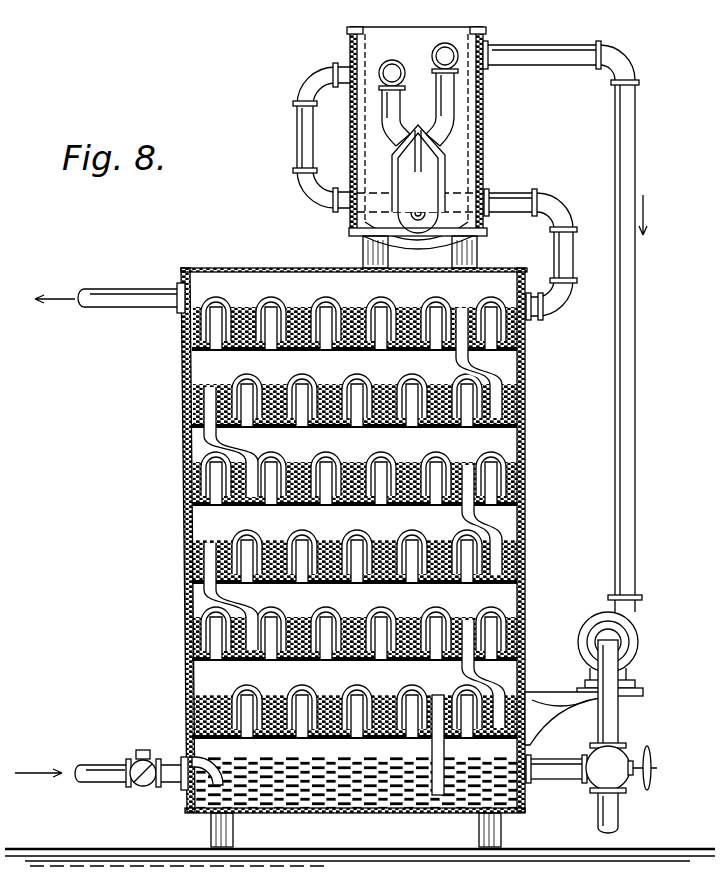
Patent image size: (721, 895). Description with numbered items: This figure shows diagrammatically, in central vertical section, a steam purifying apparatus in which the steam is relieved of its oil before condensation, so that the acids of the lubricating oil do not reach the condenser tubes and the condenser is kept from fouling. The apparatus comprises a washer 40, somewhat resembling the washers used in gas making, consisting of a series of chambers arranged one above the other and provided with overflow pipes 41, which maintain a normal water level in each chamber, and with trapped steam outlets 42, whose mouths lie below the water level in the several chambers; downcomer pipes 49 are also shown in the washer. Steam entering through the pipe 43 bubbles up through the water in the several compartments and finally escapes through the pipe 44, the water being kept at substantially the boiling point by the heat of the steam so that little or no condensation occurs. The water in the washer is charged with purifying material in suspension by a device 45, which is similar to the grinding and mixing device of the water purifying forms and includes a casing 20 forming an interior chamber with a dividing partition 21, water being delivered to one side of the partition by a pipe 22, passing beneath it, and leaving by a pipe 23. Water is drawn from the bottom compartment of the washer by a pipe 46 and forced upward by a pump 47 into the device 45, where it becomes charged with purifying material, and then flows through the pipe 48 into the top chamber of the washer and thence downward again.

The casing 20 is at (447, 183).
The dividing partition 21 is at (421, 165).
The pipe 22 is at (559, 73).
The pipe 23 is at (382, 104).
The washer 40 is at (332, 557).
The overflow pipes 41 is at (606, 346).
The trapped steam outlets 42 is at (183, 465).
The pipe 43 is at (110, 783).
The pipe 44 is at (110, 311).
The device 45 is at (485, 143).
The pipe 46 is at (592, 757).
The pump 47 is at (592, 622).
The pipe 48 is at (298, 150).
The downcomer pipes 49 is at (460, 345).